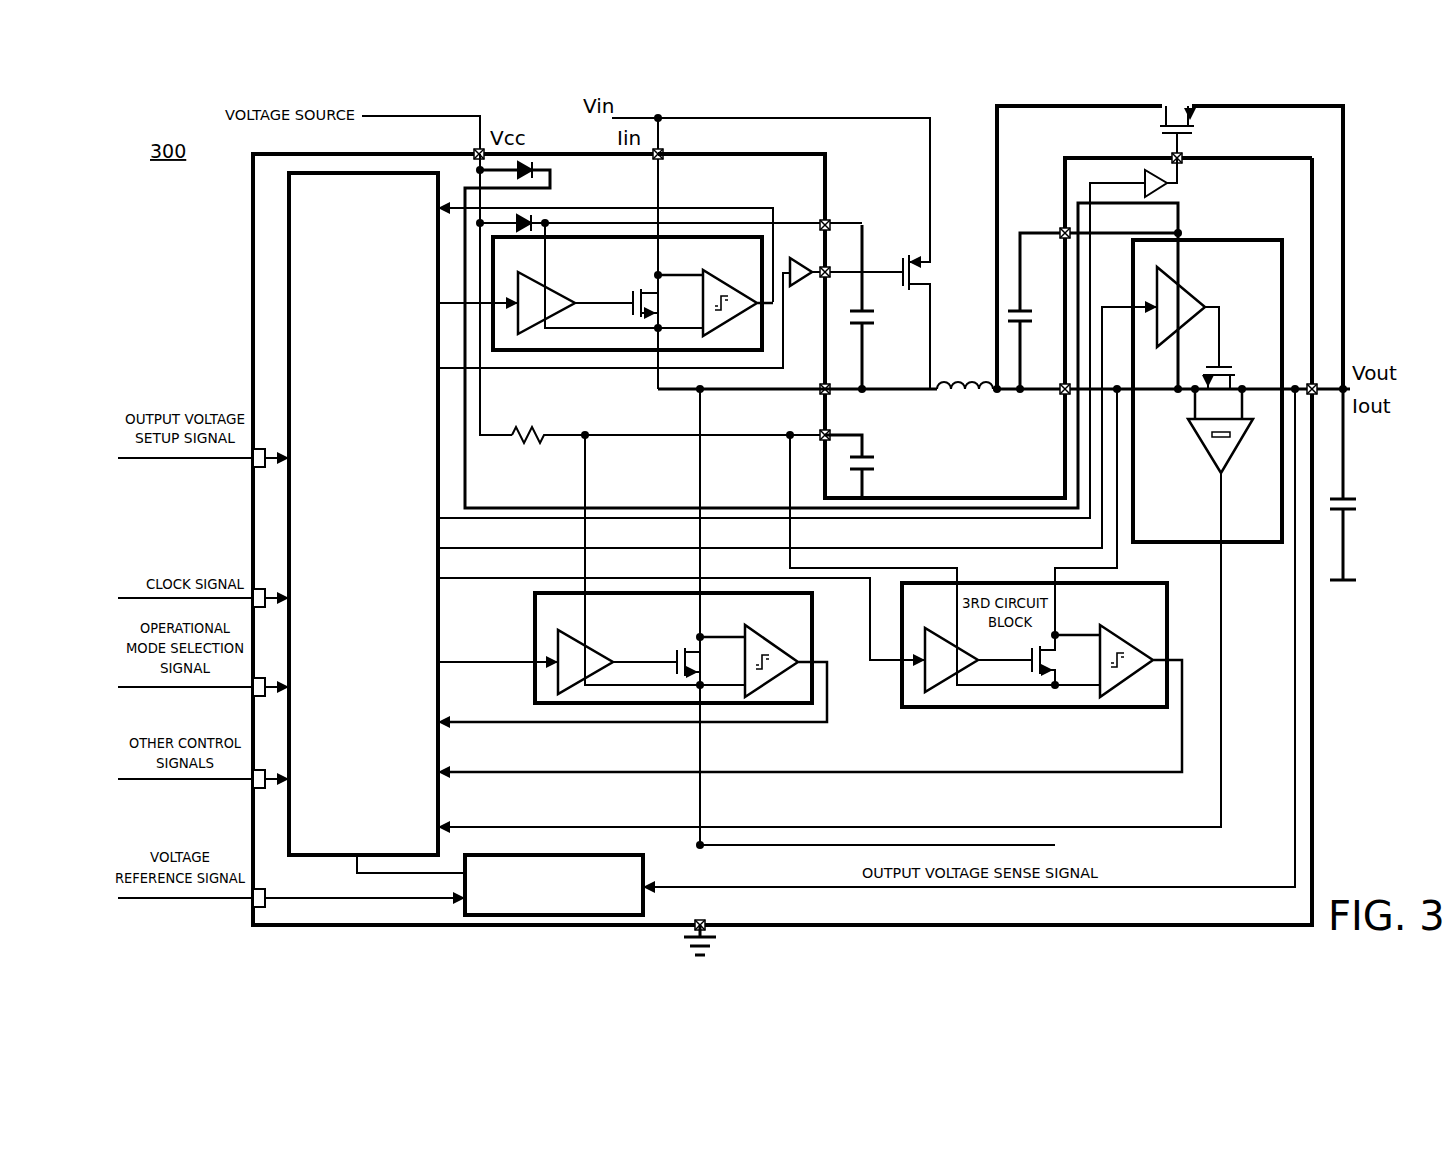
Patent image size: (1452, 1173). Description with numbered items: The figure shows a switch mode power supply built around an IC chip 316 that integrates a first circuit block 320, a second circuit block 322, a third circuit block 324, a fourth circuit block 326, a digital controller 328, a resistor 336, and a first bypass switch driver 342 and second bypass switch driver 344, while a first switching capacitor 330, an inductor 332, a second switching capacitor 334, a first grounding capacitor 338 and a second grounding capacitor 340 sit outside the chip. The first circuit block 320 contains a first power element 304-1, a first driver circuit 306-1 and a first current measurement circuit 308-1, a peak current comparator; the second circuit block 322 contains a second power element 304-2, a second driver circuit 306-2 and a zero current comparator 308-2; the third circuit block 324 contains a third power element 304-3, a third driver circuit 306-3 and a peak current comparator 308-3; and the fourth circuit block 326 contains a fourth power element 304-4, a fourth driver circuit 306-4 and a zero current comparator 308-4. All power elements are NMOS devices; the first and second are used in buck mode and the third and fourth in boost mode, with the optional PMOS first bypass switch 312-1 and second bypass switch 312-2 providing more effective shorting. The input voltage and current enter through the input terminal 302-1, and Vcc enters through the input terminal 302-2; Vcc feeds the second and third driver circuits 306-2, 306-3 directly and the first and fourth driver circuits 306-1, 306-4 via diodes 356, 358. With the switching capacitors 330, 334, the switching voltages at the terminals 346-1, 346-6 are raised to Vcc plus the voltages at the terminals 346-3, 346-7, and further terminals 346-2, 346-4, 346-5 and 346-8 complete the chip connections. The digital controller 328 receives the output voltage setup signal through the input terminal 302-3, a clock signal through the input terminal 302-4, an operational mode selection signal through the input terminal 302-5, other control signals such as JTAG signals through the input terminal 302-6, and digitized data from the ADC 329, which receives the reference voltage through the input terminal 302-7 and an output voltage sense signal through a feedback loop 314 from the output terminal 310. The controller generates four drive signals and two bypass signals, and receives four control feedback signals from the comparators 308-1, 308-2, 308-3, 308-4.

The input terminal 302-1 is at (668, 148).
The input terminal 302-2 is at (479, 150).
The input terminal 302-3 is at (257, 470).
The input terminal 302-4 is at (257, 590).
The input terminal 302-5 is at (257, 697).
The input terminal 302-6 is at (257, 792).
The input terminal 302-7 is at (257, 910).
The first power element 304-1 is at (648, 292).
The second power element 304-2 is at (695, 655).
The third power element 304-3 is at (1048, 655).
The fourth power element 304-4 is at (1236, 370).
The first driver circuit 306-1 is at (528, 337).
The second driver circuit 306-2 is at (575, 640).
The third driver circuit 306-3 is at (945, 693).
The fourth driver circuit 306-4 is at (1168, 335).
The first current measurement circuit 308-1 is at (705, 332).
The second current measurement circuit 308-2 is at (765, 690).
The third current measurement circuit 308-3 is at (1118, 693).
The fourth current measurement circuit 308-4 is at (1213, 468).
The output terminal 310 is at (1318, 386).
The first bypass switch 312-1 is at (918, 272).
The second bypass switch 312-2 is at (1195, 116).
The feedback loop 314 is at (1208, 887).
The IC chip 316 is at (253, 264).
The first circuit block 320 is at (705, 240).
The second circuit block 322 is at (535, 692).
The third circuit block 324 is at (1137, 583).
The fourth circuit block 326 is at (1258, 542).
The digital controller 328 is at (289, 322).
The analog-to-digital converter 329 is at (607, 855).
The first switching capacitor 330 is at (880, 326).
The inductor 332 is at (962, 386).
The second switching capacitor 334 is at (1036, 310).
The resistor 336 is at (525, 442).
The first grounding capacitor 338 is at (876, 467).
The second grounding capacitor 340 is at (1352, 508).
The first bypass switch driver 342 is at (795, 257).
The second bypass switch driver 344 is at (1160, 190).
The terminal 346-1 is at (828, 222).
The terminal 346-2 is at (830, 268).
The terminal 346-3 is at (820, 391).
The terminal 346-4 is at (833, 434).
The terminal 346-5 is at (1172, 157).
The terminal 346-6 is at (1060, 228).
The terminal 346-7 is at (1062, 395).
The terminal 346-8 is at (710, 922).
The diode 356 is at (527, 215).
The diode 358 is at (552, 167).